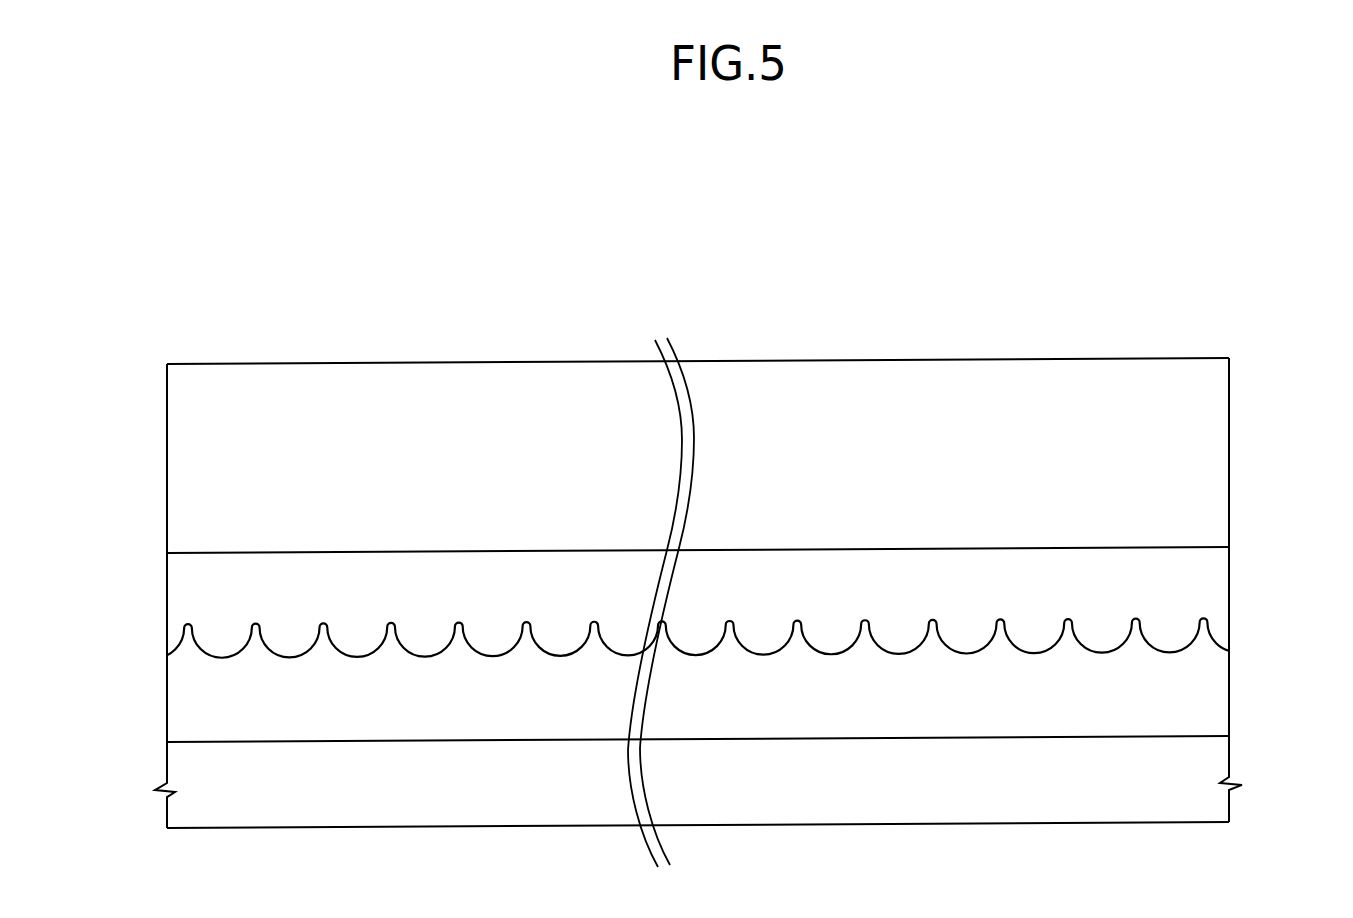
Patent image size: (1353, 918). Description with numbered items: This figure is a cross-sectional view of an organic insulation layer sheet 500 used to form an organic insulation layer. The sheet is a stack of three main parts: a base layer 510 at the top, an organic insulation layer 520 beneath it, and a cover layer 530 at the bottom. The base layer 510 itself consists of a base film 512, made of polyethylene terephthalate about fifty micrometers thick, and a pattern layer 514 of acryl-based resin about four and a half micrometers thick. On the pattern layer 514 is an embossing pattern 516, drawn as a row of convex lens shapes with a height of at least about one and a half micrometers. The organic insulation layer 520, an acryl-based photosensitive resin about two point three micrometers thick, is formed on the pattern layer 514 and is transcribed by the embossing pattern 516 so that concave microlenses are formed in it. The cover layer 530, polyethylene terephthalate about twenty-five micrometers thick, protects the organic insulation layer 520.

The organic insulation layer sheet 500 is at (706, 278).
The base layer 510 is at (1292, 607).
The base film 512 is at (1215, 415).
The pattern layer 514 is at (1215, 590).
The embossing pattern 516 is at (173, 652).
The organic insulation layer 520 is at (1215, 698).
The cover layer 530 is at (1215, 772).